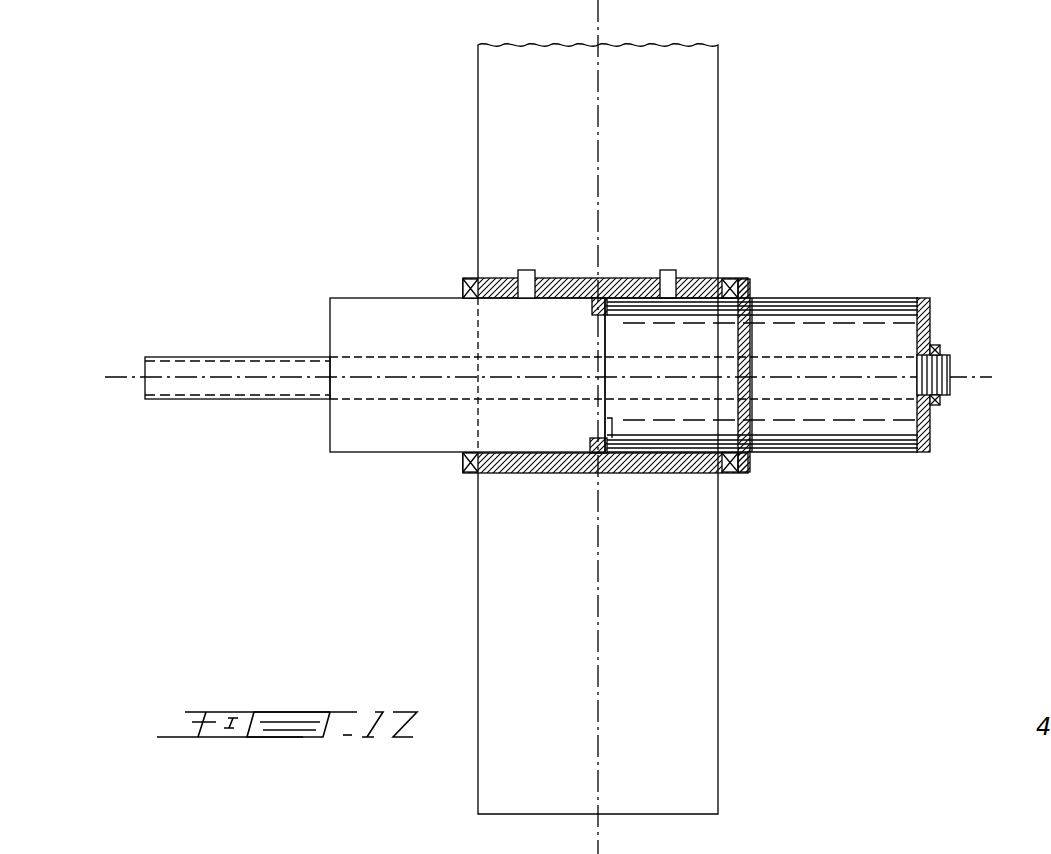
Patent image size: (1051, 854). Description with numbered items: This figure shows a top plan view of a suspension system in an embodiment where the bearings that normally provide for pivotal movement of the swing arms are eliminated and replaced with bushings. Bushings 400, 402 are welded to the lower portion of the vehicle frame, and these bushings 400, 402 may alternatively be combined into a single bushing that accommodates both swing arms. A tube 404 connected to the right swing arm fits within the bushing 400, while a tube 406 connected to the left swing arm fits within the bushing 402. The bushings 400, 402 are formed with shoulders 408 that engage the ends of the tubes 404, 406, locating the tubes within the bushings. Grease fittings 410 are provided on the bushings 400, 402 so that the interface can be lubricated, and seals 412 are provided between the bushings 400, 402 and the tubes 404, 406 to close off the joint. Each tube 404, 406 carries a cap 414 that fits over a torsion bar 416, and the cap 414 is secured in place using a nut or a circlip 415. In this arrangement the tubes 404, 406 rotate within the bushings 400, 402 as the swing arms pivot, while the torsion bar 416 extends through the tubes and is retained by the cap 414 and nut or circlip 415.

The bushing 400 is at (698, 277).
The bushing 402 is at (500, 278).
The tube 404 is at (830, 297).
The tube 406 is at (392, 299).
The shoulders 408 is at (605, 278).
The grease fittings 410 is at (527, 277).
The seals 412 is at (753, 287).
The cap 414 is at (933, 323).
The nut or circlip 415 is at (940, 346).
The torsion bar 416 is at (945, 385).